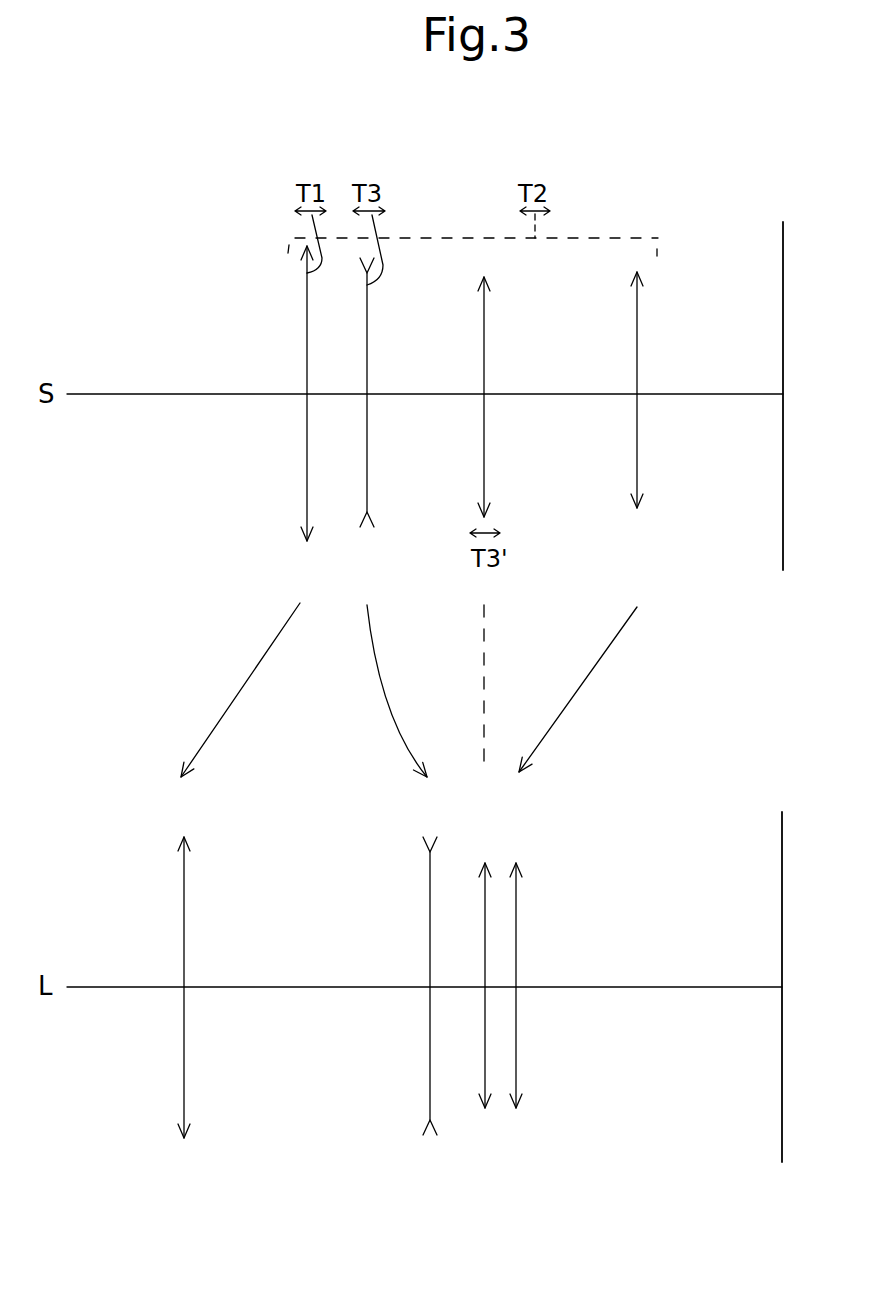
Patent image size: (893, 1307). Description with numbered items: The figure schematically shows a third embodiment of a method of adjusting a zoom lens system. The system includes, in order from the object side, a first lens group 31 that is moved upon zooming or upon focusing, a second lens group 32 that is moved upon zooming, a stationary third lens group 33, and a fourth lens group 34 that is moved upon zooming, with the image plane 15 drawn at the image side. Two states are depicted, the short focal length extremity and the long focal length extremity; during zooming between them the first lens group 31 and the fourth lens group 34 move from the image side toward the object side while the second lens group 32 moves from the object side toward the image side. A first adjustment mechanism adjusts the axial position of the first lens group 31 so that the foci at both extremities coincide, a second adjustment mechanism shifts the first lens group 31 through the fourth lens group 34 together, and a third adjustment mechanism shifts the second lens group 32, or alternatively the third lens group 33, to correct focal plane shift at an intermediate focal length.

The image plane 15 is at (784, 473).
The first lens group 31 is at (306, 430).
The second lens group 32 is at (368, 431).
The third lens group 33 is at (477, 468).
The fourth lens group 34 is at (631, 468).